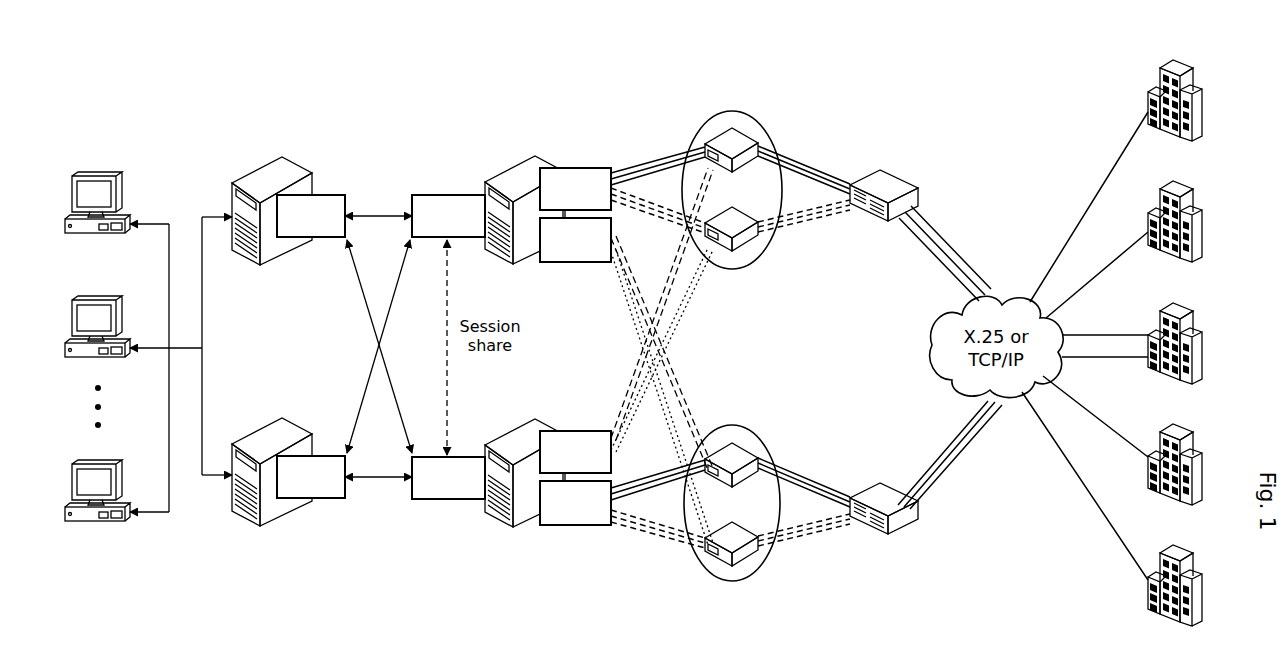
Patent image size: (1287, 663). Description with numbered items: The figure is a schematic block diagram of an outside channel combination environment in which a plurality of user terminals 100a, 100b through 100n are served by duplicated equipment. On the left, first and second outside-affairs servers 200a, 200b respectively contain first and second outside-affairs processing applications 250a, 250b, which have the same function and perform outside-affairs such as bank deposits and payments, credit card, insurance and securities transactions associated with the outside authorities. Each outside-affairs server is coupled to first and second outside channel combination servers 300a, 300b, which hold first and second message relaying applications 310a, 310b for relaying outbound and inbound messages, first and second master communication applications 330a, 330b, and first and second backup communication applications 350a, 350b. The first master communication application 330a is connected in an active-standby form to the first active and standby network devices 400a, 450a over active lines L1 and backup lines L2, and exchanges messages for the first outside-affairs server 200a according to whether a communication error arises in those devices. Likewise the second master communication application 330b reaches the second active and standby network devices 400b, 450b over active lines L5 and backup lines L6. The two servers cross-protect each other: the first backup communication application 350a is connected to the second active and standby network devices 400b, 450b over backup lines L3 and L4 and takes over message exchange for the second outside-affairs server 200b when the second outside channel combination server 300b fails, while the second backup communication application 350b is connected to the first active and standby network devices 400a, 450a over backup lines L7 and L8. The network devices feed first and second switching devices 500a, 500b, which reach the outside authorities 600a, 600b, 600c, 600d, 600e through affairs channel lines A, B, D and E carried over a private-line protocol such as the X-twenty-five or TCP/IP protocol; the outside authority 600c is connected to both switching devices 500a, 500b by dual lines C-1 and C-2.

The user terminal 100a is at (98, 172).
The user terminal 100b is at (98, 297).
The user terminal 100n is at (98, 522).
The first outside-affairs server 200a is at (283, 157).
The second outside-affairs server 200b is at (283, 420).
The first outside-affairs processing application 250a is at (325, 195).
The second outside-affairs processing application 250b is at (325, 498).
The first outside channel combination server 300a is at (508, 168).
The second outside channel combination server 300b is at (508, 430).
The first message relaying application 310a is at (448, 195).
The second message relaying application 310b is at (448, 499).
The first master communication application 330a is at (572, 168).
The second master communication application 330b is at (578, 525).
The first backup communication application 350a is at (578, 262).
The second backup communication application 350b is at (573, 431).
The first active network device 400a is at (732, 110).
The second active network device 400b is at (738, 425).
The first standby network device 450a is at (738, 270).
The second standby network device 450b is at (738, 582).
The first switching device 500a is at (896, 169).
The second switching device 500b is at (893, 522).
The outside authority 600a is at (1184, 66).
The outside authority 600b is at (1184, 187).
The outside authority 600c is at (1184, 309).
The outside authority 600d is at (1184, 430).
The outside authority 600e is at (1184, 551).
The active lines L1 is at (658, 158).
The backup lines L2 is at (666, 218).
The backup lines L3 is at (692, 387).
The backup lines L4 is at (676, 434).
The active lines L5 is at (658, 483).
The backup lines L6 is at (663, 531).
The backup lines L7 is at (679, 261).
The backup lines L8 is at (690, 301).
The affairs channel line A is at (956, 240).
The affairs channel line B is at (922, 238).
The dual line C-1 is at (955, 275).
The dual line C-2 is at (955, 420).
The affairs channel line D is at (908, 470).
The affairs channel line E is at (958, 446).